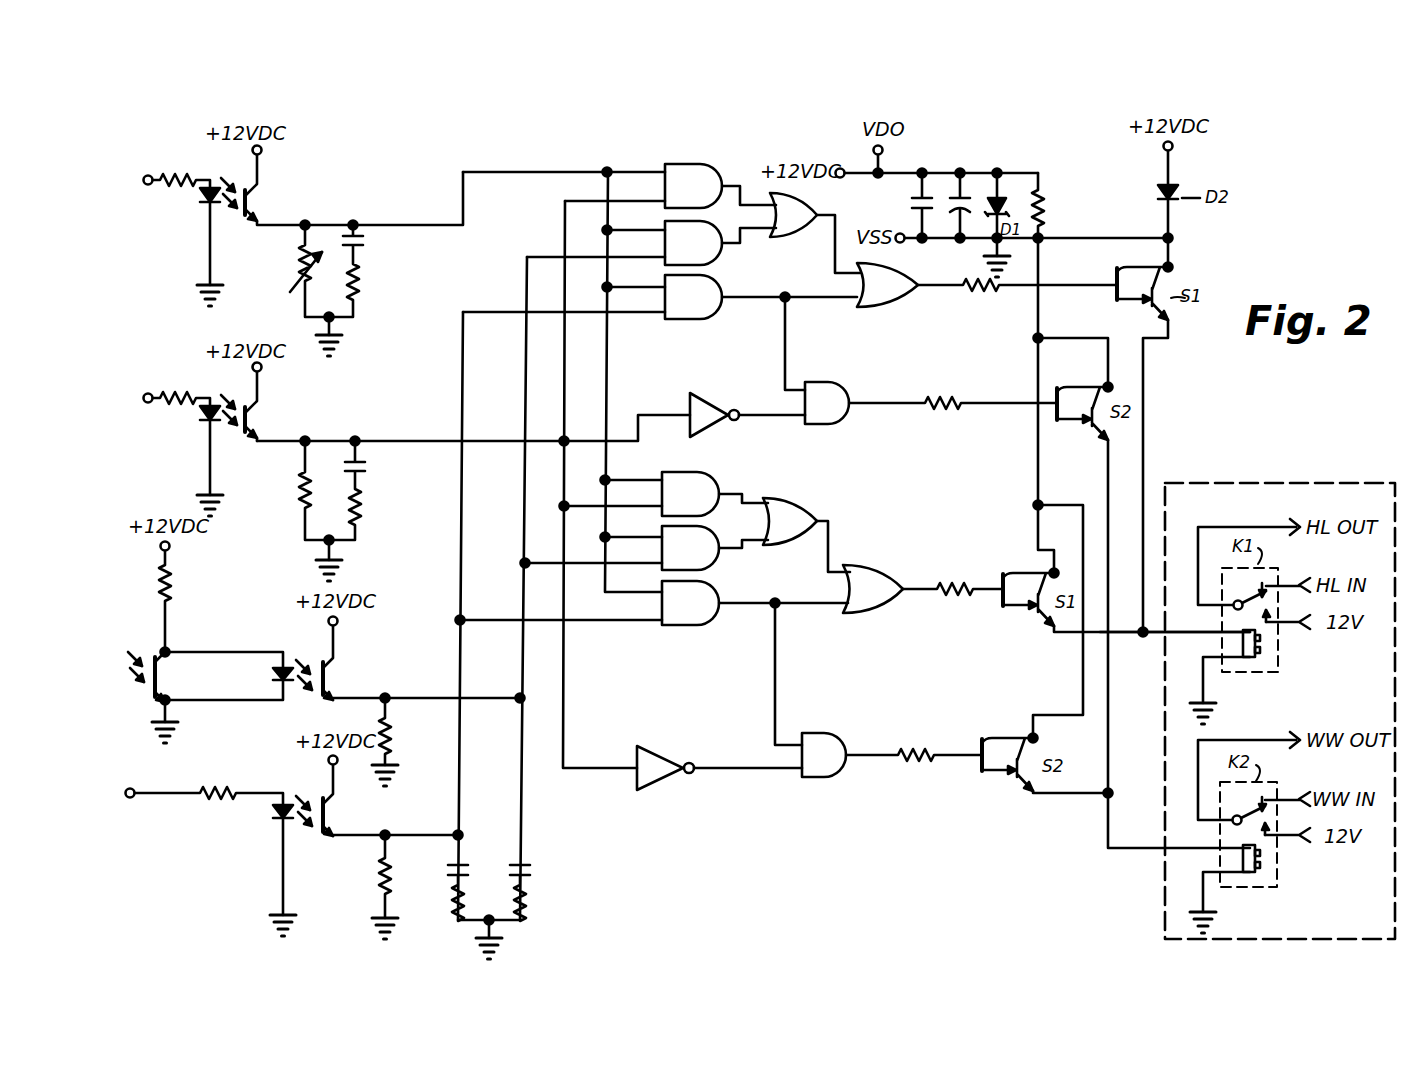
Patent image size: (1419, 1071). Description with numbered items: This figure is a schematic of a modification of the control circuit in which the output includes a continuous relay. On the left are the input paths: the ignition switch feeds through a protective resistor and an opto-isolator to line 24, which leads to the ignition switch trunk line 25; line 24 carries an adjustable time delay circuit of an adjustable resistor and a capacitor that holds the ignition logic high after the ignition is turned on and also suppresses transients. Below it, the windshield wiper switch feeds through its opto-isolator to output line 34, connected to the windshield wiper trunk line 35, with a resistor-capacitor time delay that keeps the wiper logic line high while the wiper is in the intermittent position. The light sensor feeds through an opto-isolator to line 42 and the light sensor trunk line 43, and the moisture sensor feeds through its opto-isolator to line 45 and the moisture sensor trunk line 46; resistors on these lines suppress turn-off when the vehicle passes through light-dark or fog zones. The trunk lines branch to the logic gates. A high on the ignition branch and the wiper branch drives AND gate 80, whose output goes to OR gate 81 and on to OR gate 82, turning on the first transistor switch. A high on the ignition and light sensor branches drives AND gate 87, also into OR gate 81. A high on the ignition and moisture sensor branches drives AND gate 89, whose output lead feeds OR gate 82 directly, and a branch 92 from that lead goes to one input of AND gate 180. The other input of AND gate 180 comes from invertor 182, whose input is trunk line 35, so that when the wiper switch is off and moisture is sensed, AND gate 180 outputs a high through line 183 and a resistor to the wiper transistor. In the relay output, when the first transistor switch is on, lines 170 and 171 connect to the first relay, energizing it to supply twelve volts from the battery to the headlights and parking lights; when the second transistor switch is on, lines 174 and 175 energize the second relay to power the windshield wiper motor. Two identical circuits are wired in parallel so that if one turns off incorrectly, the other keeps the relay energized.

The line 24 is at (517, 170).
The ignition switch trunk line 25 is at (607, 352).
The output line 34 is at (406, 438).
The windshield wiper trunk line 35 is at (563, 665).
The line 42 is at (422, 698).
The light sensor trunk line 43 is at (520, 744).
The line 45 is at (417, 833).
The moisture sensor trunk line 46 is at (458, 740).
The AND gate 80 is at (693, 186).
The OR gate 81 is at (782, 240).
The OR gate 82 is at (868, 310).
The AND gate 87 is at (693, 243).
The AND gate 89 is at (693, 297).
The branch 92 is at (785, 342).
The line 170 is at (1143, 372).
The line 171 is at (1118, 640).
The line 174 is at (1098, 476).
The line 175 is at (1108, 830).
The AND gate 180 is at (812, 426).
The invertor 182 is at (702, 428).
The line 183 is at (912, 378).